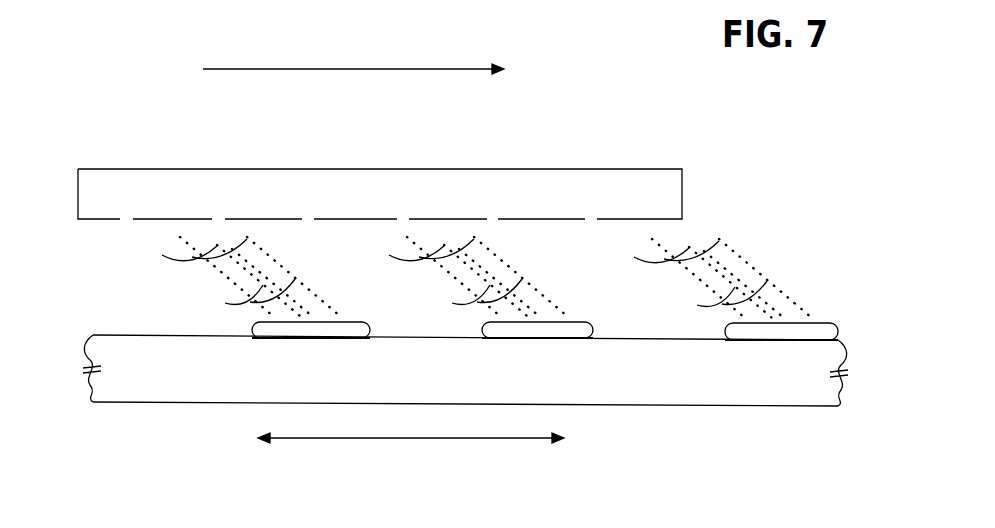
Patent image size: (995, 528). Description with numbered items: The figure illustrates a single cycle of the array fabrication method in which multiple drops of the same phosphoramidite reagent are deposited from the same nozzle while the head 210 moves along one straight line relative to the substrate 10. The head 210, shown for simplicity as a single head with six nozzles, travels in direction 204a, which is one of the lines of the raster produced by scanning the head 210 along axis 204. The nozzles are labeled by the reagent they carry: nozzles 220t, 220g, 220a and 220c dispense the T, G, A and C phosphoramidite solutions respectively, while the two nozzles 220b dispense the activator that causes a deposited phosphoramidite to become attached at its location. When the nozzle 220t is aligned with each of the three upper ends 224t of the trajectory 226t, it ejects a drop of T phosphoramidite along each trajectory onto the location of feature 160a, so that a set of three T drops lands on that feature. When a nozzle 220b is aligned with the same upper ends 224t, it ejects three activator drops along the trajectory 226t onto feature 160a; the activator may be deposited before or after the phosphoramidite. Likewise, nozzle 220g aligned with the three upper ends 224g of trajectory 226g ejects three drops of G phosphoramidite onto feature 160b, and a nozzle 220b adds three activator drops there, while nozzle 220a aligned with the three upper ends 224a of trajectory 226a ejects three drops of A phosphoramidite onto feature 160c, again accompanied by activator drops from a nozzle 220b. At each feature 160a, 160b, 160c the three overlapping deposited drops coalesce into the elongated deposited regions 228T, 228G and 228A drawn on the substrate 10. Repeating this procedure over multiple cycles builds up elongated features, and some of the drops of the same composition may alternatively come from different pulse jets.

The substrate 10 is at (446, 377).
The feature 160a is at (295, 343).
The feature 160b is at (568, 333).
The feature 160c is at (820, 332).
The axis 204 is at (360, 438).
The direction 204a is at (317, 69).
The head 210 is at (106, 140).
The nozzle 220b is at (128, 213).
The nozzle 220g is at (221, 213).
The nozzle 220t is at (307, 213).
The nozzle 220c is at (492, 213).
The nozzle 220a is at (590, 213).
The upper ends of trajectory 224t is at (180, 240).
The upper ends of trajectory 224g is at (407, 240).
The upper ends of trajectory 224a is at (652, 241).
The trajectory 226t is at (235, 285).
The trajectory 226g is at (462, 292).
The trajectory 226a is at (708, 289).
The elongated deposited region 228T is at (322, 322).
The elongated deposited region 228G is at (552, 322).
The elongated deposited region 228A is at (792, 324).